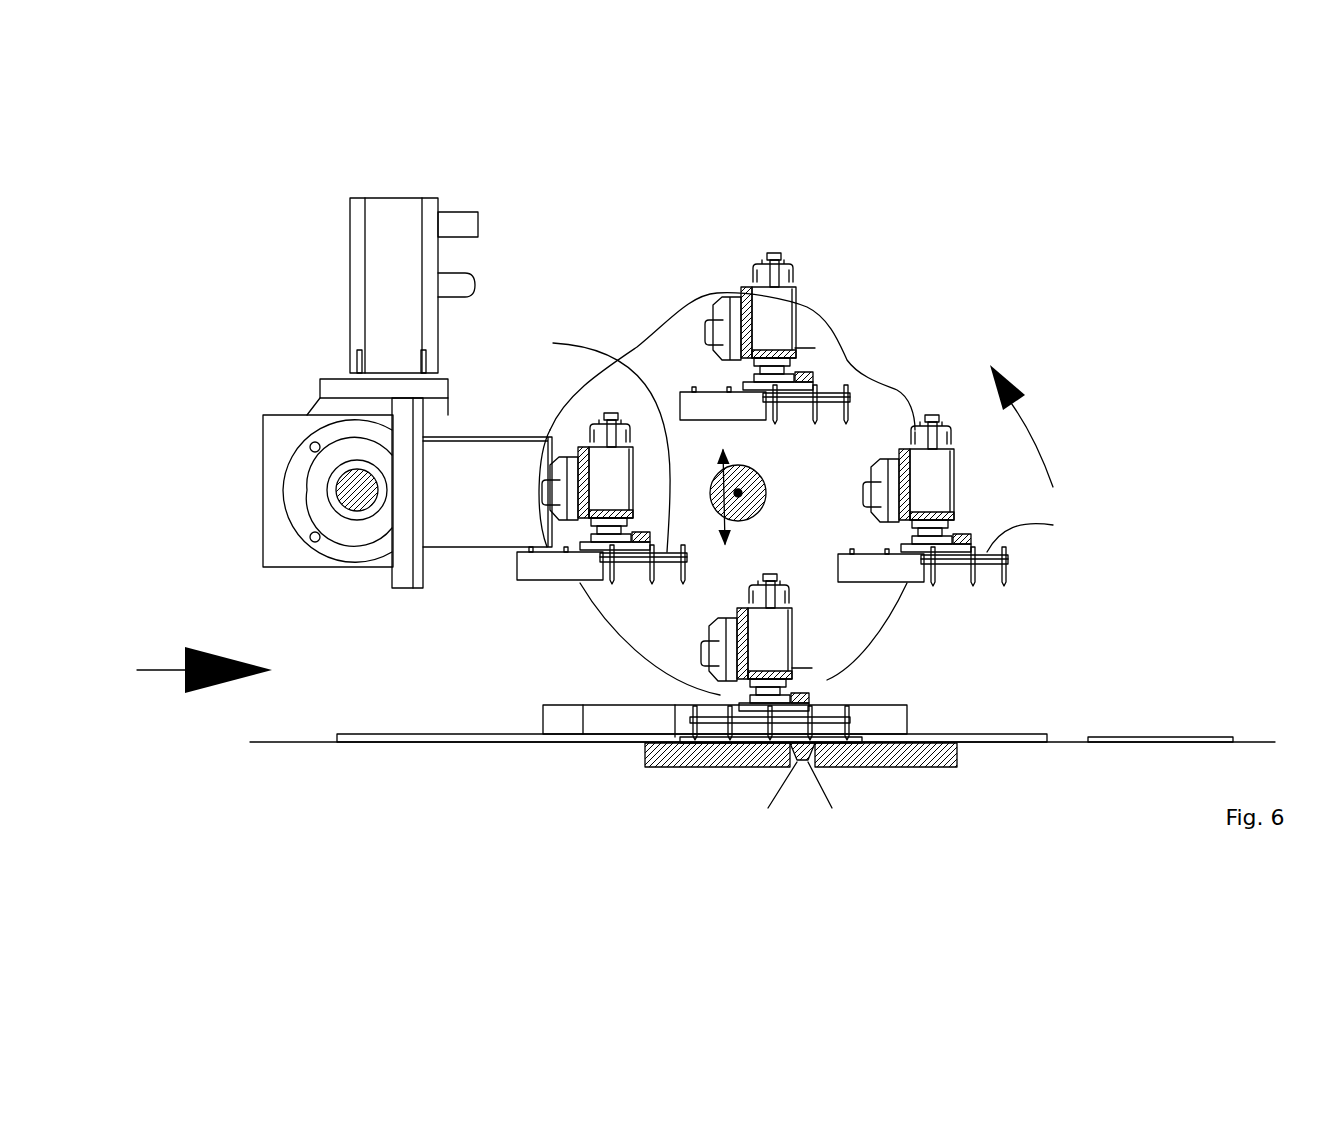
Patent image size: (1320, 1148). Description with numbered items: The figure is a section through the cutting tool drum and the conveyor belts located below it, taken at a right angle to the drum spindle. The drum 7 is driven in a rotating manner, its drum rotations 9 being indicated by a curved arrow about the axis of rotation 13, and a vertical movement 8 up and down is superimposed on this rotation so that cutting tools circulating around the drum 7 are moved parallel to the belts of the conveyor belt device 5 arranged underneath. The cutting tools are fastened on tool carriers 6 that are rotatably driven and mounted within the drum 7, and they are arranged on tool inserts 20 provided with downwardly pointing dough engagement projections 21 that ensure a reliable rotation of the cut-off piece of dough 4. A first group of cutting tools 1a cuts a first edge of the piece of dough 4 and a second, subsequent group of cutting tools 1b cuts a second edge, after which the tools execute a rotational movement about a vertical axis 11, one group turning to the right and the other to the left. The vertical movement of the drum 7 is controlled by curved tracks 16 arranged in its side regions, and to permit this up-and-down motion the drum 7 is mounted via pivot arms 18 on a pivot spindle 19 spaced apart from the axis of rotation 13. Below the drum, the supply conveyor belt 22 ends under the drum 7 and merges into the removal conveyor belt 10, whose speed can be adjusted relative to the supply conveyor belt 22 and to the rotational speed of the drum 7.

The first group of cutting tools 1a is at (710, 400).
The second group of cutting tools 1b is at (535, 582).
The piece of dough 4 is at (690, 767).
The conveyor belt device 5 is at (322, 760).
The tool carrier 6 is at (578, 455).
The drum 7 is at (861, 270).
The vertical movement 8 is at (728, 525).
The drum rotations 9 is at (1030, 420).
The removal conveyor belt 10 is at (1047, 750).
The vertical axis 11 is at (608, 490).
The axis of rotation 13 is at (740, 493).
The curved track 16 is at (615, 350).
The pivot arm 18 is at (478, 450).
The pivot spindle 19 is at (337, 490).
The tool insert 20 is at (553, 345).
The dough engagement projection 21 is at (665, 590).
The supply conveyor belt 22 is at (440, 742).